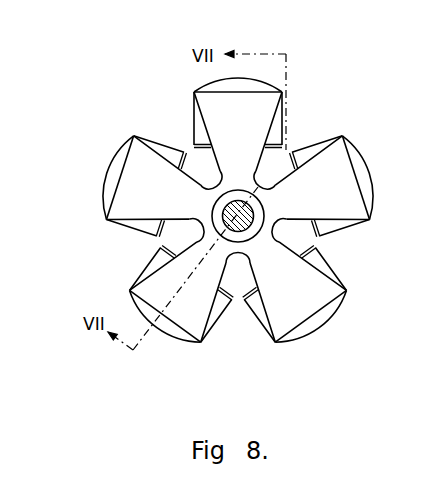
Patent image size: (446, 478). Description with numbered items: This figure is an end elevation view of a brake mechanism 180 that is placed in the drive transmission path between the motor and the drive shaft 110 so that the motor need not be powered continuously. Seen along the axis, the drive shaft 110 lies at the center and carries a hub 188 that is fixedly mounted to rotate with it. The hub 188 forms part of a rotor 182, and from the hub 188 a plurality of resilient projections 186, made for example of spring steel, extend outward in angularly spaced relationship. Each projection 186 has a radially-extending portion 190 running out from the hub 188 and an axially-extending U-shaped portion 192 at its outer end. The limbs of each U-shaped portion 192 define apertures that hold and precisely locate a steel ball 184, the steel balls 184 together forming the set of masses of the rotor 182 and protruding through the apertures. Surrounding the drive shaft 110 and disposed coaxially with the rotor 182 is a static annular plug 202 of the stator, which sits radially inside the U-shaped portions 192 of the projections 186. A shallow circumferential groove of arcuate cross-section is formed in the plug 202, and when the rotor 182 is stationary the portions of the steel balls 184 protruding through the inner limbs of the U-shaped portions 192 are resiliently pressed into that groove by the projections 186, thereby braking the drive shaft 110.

The drive shaft 110 is at (225, 218).
The brake mechanism 180 is at (140, 100).
The rotor 182 is at (236, 253).
The steel balls 184 is at (105, 177).
The resilient projections 186 is at (150, 258).
The hub 188 is at (224, 194).
The radially-extending portions 190 is at (312, 186).
The axially-extending U-shaped portions 192 is at (293, 150).
The annular plug 202 is at (318, 240).